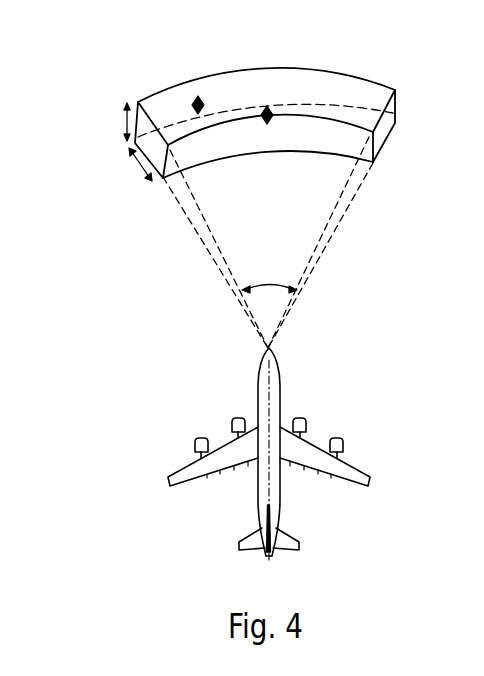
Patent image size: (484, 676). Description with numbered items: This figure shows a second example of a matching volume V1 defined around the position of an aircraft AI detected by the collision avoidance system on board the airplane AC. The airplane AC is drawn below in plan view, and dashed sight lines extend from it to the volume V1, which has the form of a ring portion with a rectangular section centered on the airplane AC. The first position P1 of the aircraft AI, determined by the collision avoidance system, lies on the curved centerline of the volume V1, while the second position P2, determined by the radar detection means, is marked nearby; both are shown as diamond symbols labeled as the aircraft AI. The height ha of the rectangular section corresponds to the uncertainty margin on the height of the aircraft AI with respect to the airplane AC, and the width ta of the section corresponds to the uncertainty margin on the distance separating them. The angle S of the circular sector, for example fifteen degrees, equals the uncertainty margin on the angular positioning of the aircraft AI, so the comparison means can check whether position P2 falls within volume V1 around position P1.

The matching volume V1 is at (350, 72).
The first position P1 is at (262, 120).
The second position P2 is at (198, 95).
The aircraft AI is at (213, 96).
The height of the rectangular section ha is at (124, 123).
The width of the rectangular section ta is at (135, 163).
The angle of the circular sector S is at (267, 285).
The airplane AC is at (281, 492).